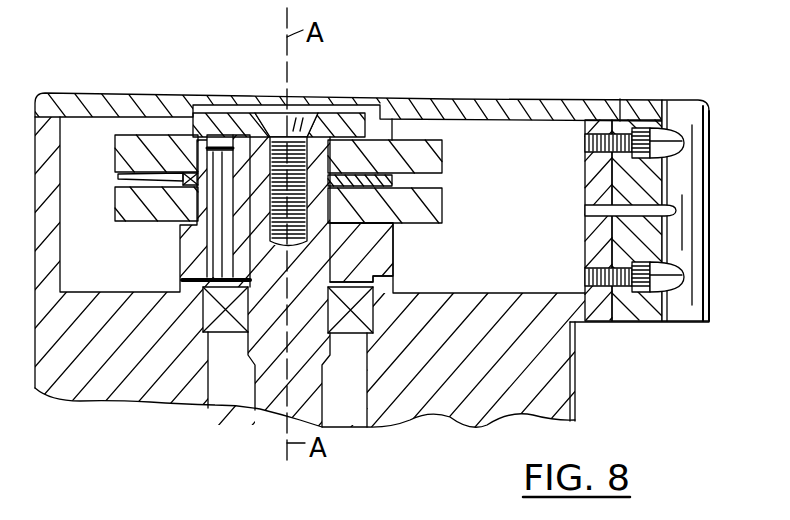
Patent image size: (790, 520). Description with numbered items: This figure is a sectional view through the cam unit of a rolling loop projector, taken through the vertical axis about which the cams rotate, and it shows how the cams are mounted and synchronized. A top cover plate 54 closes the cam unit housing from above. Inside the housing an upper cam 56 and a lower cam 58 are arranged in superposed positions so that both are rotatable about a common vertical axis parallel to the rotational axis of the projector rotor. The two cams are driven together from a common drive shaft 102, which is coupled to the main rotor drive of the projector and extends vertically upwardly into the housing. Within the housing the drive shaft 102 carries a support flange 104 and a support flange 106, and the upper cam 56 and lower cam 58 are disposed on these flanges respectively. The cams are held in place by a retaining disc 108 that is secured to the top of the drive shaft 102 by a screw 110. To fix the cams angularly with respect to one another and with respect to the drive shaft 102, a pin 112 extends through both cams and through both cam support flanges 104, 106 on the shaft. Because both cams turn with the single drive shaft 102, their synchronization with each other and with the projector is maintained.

The top cover plate 54 is at (513, 100).
The upper cam 56 is at (151, 142).
The lower cam 58 is at (136, 225).
The drive shaft 102 is at (268, 395).
The support flange 104 is at (376, 178).
The support flange 106 is at (378, 257).
The retaining disc 108 is at (243, 118).
The screw 110 is at (322, 116).
The pin 112 is at (120, 175).